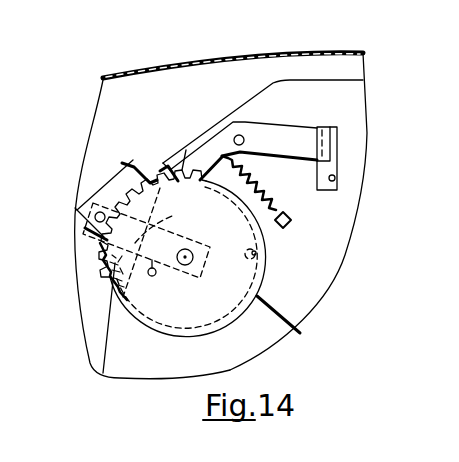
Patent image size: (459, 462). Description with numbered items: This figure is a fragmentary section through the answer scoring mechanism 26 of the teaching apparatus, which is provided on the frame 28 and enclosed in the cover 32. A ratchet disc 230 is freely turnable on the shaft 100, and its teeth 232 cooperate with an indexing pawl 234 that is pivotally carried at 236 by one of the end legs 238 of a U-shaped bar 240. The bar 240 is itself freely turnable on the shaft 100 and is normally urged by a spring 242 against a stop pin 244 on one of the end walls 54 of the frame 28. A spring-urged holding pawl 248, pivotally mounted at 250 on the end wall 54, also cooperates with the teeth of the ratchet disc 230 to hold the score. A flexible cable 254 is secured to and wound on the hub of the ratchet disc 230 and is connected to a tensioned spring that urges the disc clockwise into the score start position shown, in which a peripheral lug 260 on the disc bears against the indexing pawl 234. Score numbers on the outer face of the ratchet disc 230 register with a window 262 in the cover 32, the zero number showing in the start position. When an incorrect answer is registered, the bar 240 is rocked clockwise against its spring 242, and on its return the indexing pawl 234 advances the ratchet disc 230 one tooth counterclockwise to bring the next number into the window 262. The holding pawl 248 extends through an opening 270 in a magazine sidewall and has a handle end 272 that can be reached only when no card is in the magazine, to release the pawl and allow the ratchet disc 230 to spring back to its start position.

The answer scoring mechanism 26 is at (285, 245).
The frame 28 is at (352, 92).
The cover 32 is at (287, 50).
The end wall 54 is at (253, 103).
The shaft 100 is at (186, 266).
The ratchet disc 230 is at (191, 334).
The teeth 232 is at (110, 270).
The indexing pawl 234 is at (150, 176).
The pivot 236 is at (95, 217).
The end legs 238 is at (167, 242).
The U-shaped bar 240 is at (90, 230).
The spring 242 is at (114, 284).
The stop pin 244 is at (152, 277).
The holding pawl 248 is at (186, 150).
The pivot 250 is at (239, 135).
The flexible cable 254 is at (270, 307).
The peripheral lug 260 is at (136, 171).
The window 262 is at (258, 255).
The opening 270 is at (336, 178).
The handle end 272 is at (331, 150).